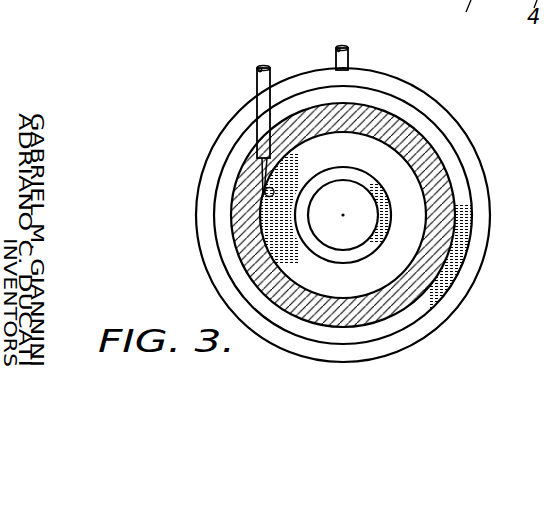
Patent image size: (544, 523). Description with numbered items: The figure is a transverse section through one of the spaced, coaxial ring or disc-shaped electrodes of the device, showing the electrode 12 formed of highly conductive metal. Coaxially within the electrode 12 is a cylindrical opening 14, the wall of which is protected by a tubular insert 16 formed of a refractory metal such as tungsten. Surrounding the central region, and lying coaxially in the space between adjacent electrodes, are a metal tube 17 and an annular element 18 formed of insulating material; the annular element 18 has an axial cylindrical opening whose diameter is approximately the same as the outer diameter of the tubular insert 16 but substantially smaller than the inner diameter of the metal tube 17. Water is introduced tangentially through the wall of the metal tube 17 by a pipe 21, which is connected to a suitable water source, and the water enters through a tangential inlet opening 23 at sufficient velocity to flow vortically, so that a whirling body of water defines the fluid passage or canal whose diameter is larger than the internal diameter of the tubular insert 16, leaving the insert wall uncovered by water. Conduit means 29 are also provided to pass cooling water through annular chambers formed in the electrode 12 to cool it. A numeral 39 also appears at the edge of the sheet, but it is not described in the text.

The ring or disc-shaped electrode 12 is at (450, 118).
The cylindrical opening 14 is at (378, 198).
The tubular insert 16 is at (360, 250).
The metal tube 17 is at (437, 165).
The annular element (insulator) 18 is at (400, 252).
The pipe 21 is at (263, 92).
The tangential inlet opening 23 is at (263, 198).
The conduit means 29 is at (349, 57).
The conduit 39 is at (466, 22).